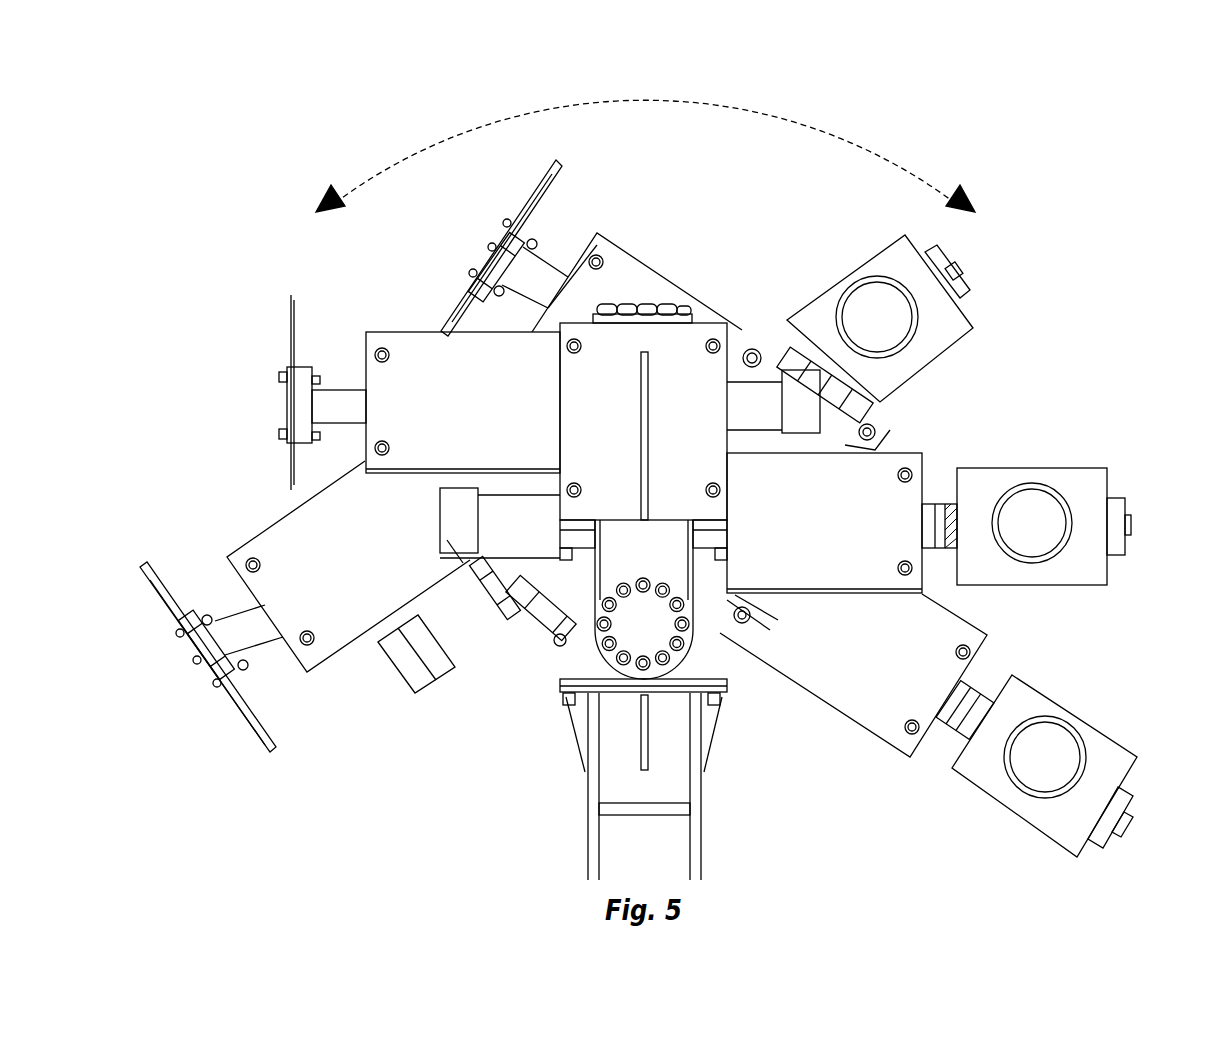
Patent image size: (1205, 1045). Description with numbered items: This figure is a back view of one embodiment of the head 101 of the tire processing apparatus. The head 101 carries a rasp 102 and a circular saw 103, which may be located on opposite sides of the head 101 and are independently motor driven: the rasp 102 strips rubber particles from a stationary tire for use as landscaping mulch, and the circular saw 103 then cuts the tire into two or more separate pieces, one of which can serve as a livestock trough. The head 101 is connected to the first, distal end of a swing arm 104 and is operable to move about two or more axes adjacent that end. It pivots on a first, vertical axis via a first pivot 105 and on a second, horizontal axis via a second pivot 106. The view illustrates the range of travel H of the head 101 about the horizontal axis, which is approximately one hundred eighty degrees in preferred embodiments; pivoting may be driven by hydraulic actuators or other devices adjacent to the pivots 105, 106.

The head 101 is at (1030, 100).
The rasp 102 is at (1078, 477).
The circular saw 103 is at (283, 407).
The swing arm 104 is at (700, 838).
The first pivot 105 is at (636, 313).
The second pivot 106 is at (637, 625).